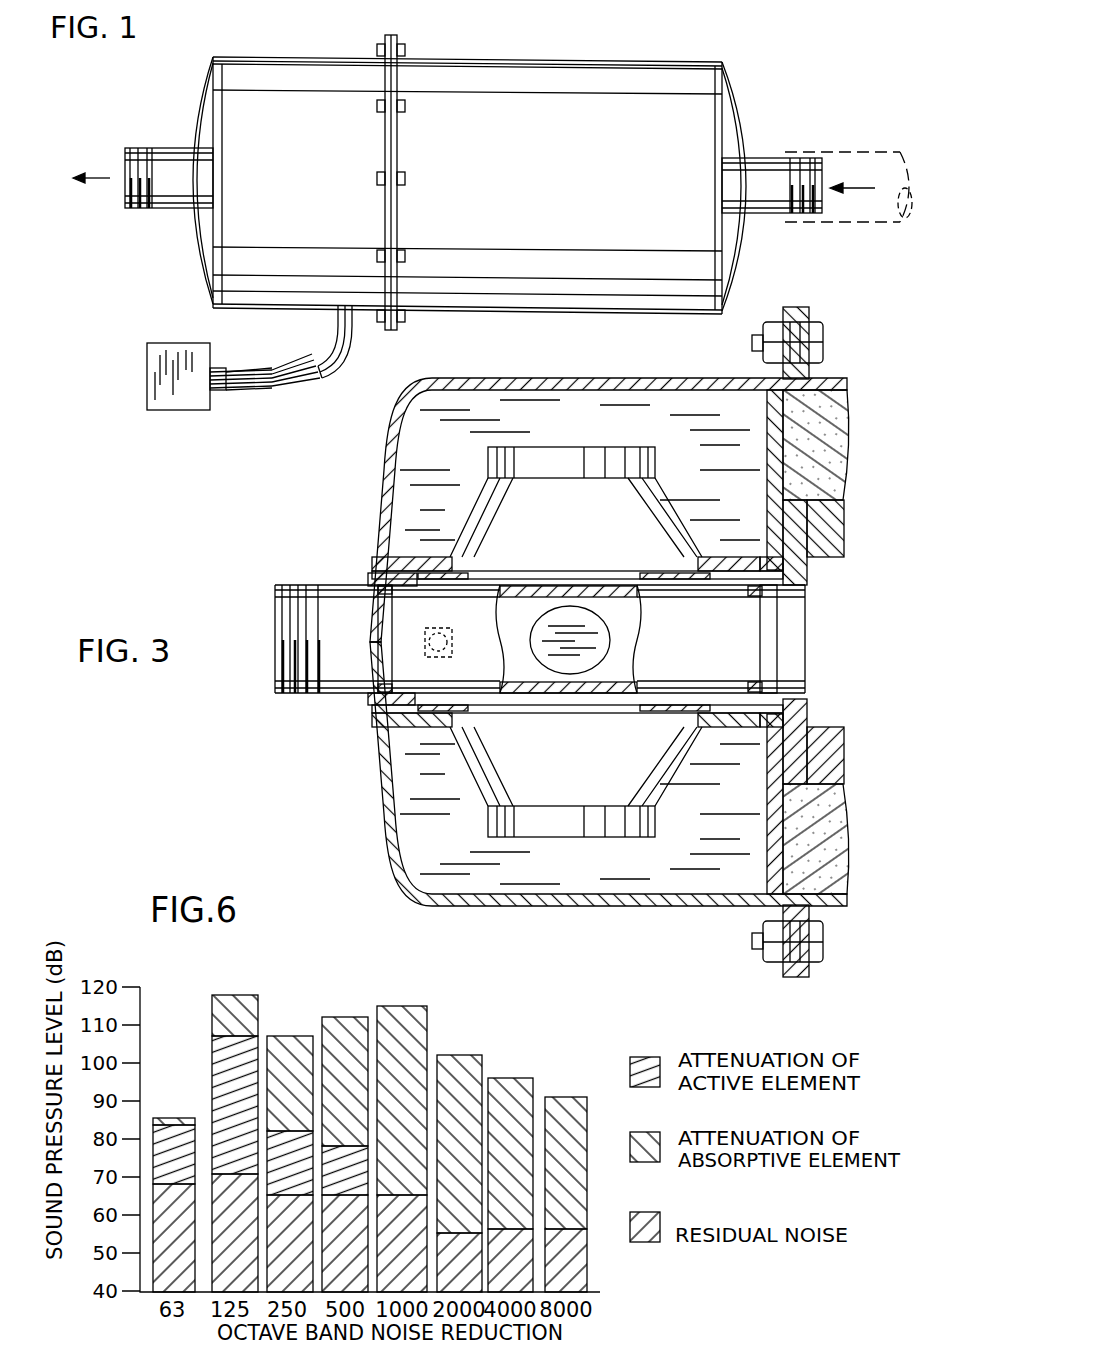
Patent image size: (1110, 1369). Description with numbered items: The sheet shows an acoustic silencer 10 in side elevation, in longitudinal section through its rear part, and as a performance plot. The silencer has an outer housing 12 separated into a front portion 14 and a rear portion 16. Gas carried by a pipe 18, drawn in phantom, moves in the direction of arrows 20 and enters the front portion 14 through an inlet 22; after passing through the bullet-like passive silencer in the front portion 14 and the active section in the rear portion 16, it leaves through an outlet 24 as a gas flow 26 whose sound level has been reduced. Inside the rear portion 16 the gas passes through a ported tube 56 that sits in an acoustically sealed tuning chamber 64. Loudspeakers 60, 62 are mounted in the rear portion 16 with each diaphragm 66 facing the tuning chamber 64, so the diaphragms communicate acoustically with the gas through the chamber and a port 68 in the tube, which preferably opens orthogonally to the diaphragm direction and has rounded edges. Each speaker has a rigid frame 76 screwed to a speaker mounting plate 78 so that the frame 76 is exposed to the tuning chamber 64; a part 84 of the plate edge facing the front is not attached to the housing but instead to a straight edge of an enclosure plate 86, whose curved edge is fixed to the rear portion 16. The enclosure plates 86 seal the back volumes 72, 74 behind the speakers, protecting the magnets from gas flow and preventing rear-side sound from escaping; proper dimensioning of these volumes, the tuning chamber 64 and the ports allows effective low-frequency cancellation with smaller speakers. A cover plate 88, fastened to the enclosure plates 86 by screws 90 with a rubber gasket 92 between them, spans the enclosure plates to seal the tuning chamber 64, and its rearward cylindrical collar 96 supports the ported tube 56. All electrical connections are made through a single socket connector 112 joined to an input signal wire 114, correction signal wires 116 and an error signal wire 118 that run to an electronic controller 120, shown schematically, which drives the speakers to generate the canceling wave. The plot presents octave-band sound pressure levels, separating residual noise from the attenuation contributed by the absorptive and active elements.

In FIG. 1, the acoustic silencer 10 is at (469, 42).
In FIG. 1, the outer housing 12 is at (575, 62).
In FIG. 1, the front portion 14 is at (567, 201).
In FIG. 1, the rear portion 16 is at (293, 195).
In FIG. 3, the rear portion 16 is at (497, 380).
In FIG. 1, the pipe 18 is at (830, 152).
In FIG. 1, the arrows 20 is at (860, 190).
In FIG. 1, the inlet 22 is at (768, 158).
In FIG. 1, the outlet 24 is at (137, 148).
In FIG. 1, the gas flow 26 is at (107, 180).
In FIG. 3, the ported tube 56 is at (530, 686).
In FIG. 3, the loudspeaker 60 is at (565, 826).
In FIG. 3, the loudspeaker 62 is at (570, 462).
In FIG. 3, the tuning chamber 64 is at (368, 579).
In FIG. 3, the diaphragm 66 is at (560, 540).
In FIG. 3, the port 68 is at (567, 673).
In FIG. 3, the enclosed volume 72 is at (662, 868).
In FIG. 3, the enclosed volume 74 is at (687, 520).
In FIG. 3, the rigid frame 76 is at (702, 707).
In FIG. 3, the speaker mounting plate 78 is at (738, 565).
In FIG. 3, the part of peripheral edge 84 is at (767, 556).
In FIG. 3, the enclosure plate 86 is at (767, 455).
In FIG. 3, the cover plate 88 is at (809, 580).
In FIG. 3, the screws 90 is at (822, 522).
In FIG. 3, the rubber gasket 92 is at (818, 455).
In FIG. 3, the cylindrical collar 96 is at (757, 598).
In FIG. 3, the socket connector 112 is at (336, 314).
In FIG. 3, the input signal wire 114 is at (255, 395).
In FIG. 3, the correction signal wires 116 is at (288, 378).
In FIG. 3, the error signal wire 118 is at (252, 372).
In FIG. 3, the electronic controller 120 is at (188, 400).